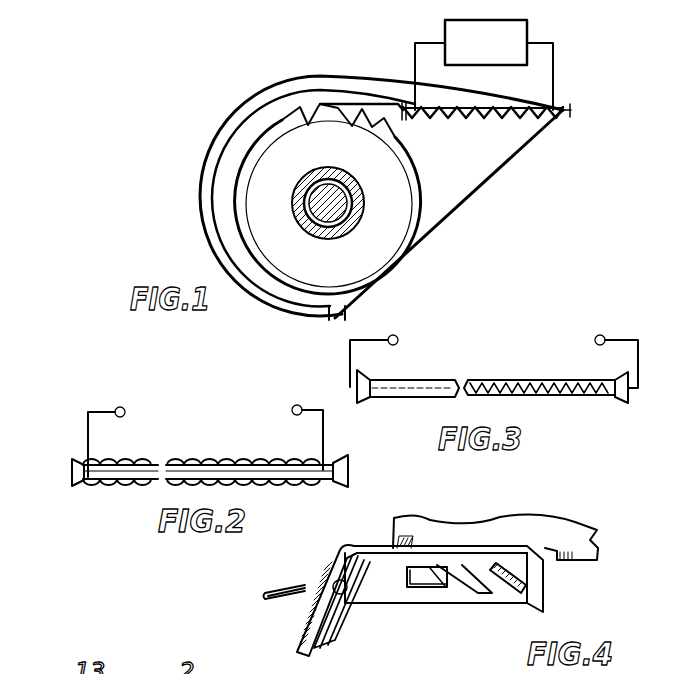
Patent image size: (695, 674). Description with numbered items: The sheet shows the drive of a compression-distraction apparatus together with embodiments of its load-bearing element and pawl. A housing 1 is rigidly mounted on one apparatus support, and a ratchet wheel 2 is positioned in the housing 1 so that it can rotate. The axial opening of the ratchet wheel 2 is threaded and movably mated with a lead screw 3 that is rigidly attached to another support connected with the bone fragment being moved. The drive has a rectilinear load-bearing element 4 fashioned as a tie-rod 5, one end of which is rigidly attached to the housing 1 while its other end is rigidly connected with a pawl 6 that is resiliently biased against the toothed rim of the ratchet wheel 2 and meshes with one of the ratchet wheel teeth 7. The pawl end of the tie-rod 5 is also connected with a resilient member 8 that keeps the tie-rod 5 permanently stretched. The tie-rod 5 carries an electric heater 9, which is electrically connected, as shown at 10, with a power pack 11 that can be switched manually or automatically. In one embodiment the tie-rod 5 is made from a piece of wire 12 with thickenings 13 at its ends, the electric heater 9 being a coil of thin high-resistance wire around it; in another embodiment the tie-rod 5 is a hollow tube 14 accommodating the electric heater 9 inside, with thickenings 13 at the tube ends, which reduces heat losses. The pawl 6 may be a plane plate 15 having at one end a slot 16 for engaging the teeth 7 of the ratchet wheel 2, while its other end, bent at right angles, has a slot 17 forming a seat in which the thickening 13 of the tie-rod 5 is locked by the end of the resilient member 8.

In FIG. 1, the housing 1 is at (500, 188).
In FIG. 1, the ratchet wheel 2 is at (428, 222).
In FIG. 1, the lead screw 3 is at (350, 183).
In FIG. 1, the load-bearing element 4 is at (462, 117).
In FIG. 1, the tie-rod 5 is at (498, 118).
In FIG. 2, the tie-rod 5 is at (212, 465).
In FIG. 3, the tie-rod 5 is at (407, 380).
In FIG. 4, the tie-rod 5 is at (285, 587).
In FIG. 1, the pawl 6 is at (347, 103).
In FIG. 4, the pawl 6 is at (485, 604).
In FIG. 1, the ratchet wheel teeth 7 is at (300, 118).
In FIG. 4, the ratchet wheel teeth 7 is at (510, 592).
In FIG. 1, the resilient member 8 is at (237, 133).
In FIG. 1, the electric heater 9 is at (530, 118).
In FIG. 2, the electric heater 9 is at (121, 479).
In FIG. 3, the electric heater 9 is at (537, 378).
In FIG. 1, the electrical connection 10 is at (415, 70).
In FIG. 2, the electrical connection 10 is at (88, 434).
In FIG. 3, the electrical connection 10 is at (350, 363).
In FIG. 1, the power pack 11 is at (486, 42).
In FIG. 2, the piece of wire 12 is at (135, 463).
In FIG. 2, the thickenings 13 is at (72, 471).
In FIG. 3, the thickenings 13 is at (362, 400).
In FIG. 4, the thickenings 13 is at (347, 594).
In FIG. 3, the hollow tube 14 is at (505, 378).
In FIG. 4, the plane plate 15 is at (395, 594).
In FIG. 4, the slot 16 is at (432, 578).
In FIG. 4, the slot 17 is at (332, 612).